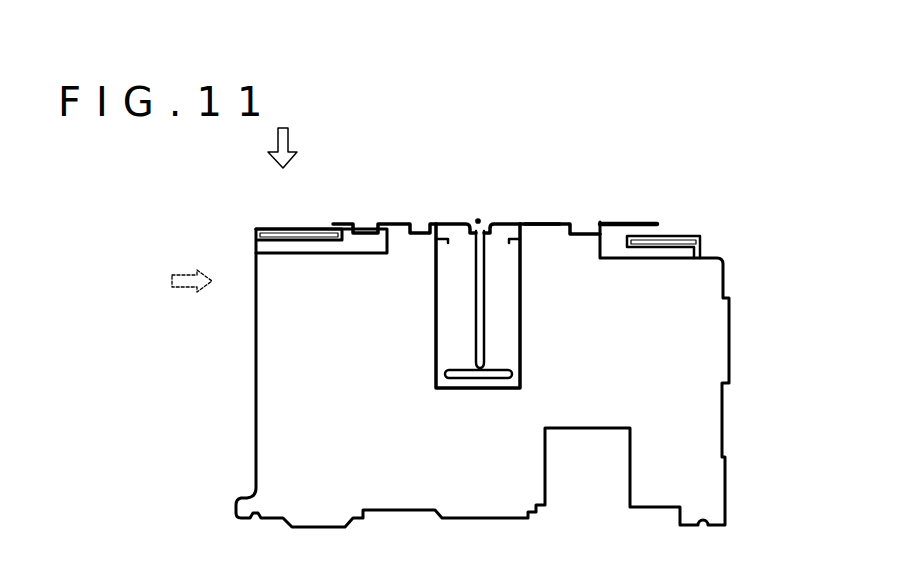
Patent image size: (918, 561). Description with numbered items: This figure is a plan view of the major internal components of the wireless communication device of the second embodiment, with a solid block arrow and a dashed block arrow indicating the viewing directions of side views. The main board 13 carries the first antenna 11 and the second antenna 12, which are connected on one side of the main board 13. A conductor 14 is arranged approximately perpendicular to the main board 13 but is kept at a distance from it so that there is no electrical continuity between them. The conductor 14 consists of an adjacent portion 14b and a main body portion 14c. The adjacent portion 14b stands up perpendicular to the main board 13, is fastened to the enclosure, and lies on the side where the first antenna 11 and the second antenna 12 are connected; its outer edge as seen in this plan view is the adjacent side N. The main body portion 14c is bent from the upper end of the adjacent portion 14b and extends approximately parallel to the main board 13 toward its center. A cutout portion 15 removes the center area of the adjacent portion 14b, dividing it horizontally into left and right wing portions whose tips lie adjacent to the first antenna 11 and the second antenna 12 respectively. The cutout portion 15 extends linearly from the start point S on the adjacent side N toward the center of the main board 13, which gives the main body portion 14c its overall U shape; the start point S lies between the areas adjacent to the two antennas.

The first antenna 11 is at (322, 225).
The second antenna 12 is at (670, 234).
The main board 13 is at (718, 330).
The conductor 14 is at (449, 212).
The adjacent portion 14b is at (617, 221).
The main body portion 14c is at (510, 318).
The cutout portion 15 is at (482, 371).
The start point S is at (478, 219).
The adjacent side N is at (540, 222).